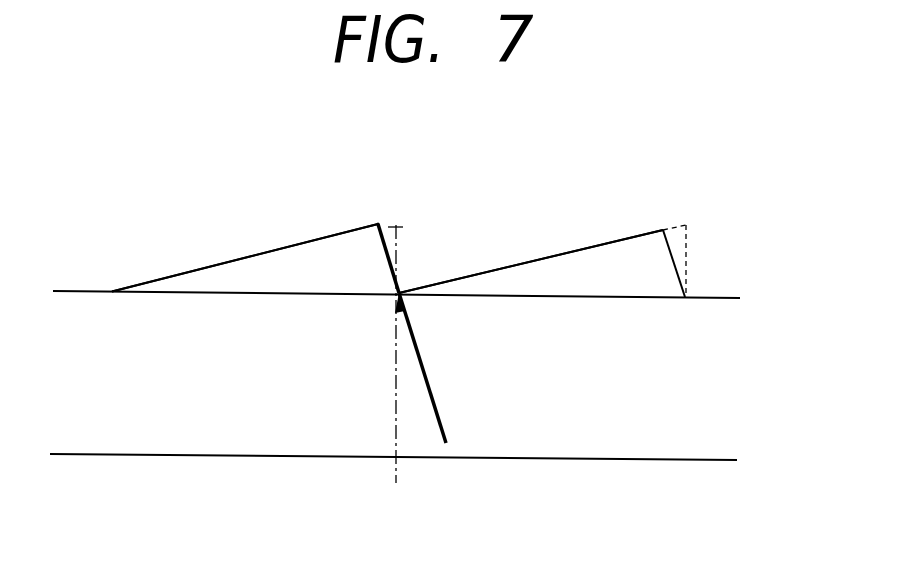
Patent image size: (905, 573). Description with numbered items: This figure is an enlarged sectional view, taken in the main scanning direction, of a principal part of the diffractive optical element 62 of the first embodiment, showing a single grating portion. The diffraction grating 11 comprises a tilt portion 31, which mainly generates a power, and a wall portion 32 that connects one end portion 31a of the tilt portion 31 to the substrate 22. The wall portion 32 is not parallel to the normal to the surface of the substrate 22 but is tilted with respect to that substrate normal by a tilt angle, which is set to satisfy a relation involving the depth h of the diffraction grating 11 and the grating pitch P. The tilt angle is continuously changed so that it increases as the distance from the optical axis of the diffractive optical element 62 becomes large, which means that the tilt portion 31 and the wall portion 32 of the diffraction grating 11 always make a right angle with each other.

The diffraction grating 11 is at (790, 320).
The substrate 22 is at (240, 435).
The tilt portion 31 is at (247, 256).
The end portion 31a is at (379, 226).
The wall portion 32 is at (384, 246).
The diffractive optical element 62 is at (582, 210).
The grating pitch P is at (399, 293).
The depth of the diffraction grating h is at (397, 227).